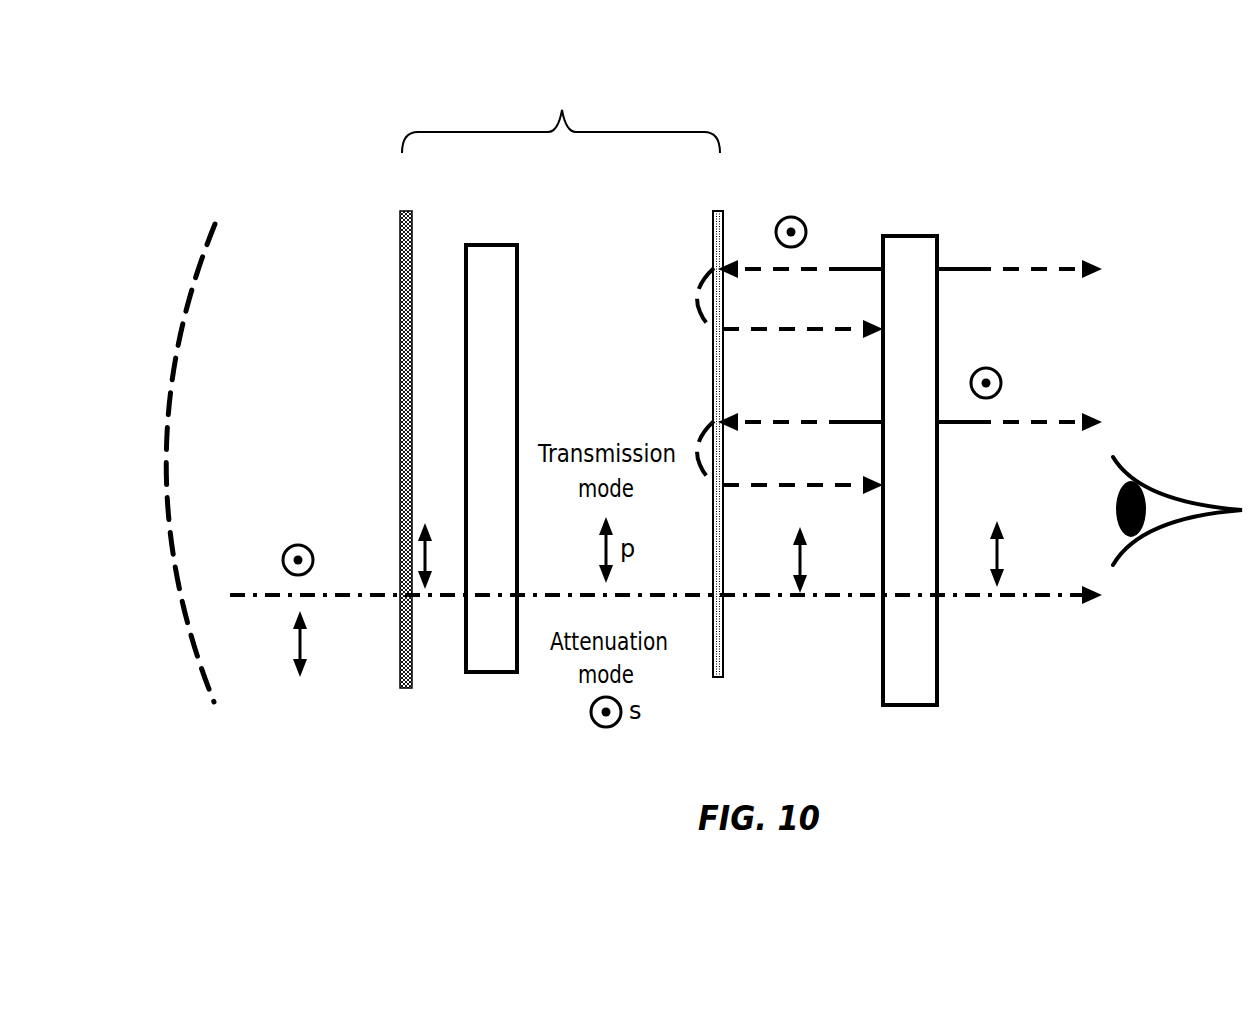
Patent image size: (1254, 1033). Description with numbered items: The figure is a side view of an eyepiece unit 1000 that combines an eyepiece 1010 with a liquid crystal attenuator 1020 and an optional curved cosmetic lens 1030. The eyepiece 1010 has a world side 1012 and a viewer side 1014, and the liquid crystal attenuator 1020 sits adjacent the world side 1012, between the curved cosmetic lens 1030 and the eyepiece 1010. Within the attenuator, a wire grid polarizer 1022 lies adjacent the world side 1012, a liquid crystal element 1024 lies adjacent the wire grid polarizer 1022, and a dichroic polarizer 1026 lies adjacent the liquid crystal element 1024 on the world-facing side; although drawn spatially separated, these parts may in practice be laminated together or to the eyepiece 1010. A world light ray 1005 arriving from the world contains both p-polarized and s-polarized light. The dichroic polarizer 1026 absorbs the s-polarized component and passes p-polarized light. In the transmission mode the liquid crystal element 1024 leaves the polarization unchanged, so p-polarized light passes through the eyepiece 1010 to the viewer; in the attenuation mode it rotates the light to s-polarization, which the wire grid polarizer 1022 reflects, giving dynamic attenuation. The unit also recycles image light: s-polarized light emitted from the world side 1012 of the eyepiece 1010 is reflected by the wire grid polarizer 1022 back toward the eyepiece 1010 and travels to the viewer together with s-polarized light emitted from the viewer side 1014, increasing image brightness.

The eyepiece unit 1000 is at (822, 114).
The world light ray 1005 is at (272, 595).
The curved cosmetic lens 1030 is at (172, 344).
The liquid crystal attenuator 1020 is at (561, 96).
The dichroic polarizer 1026 is at (398, 270).
The liquid crystal element 1024 is at (517, 268).
The wire grid polarizer 1022 is at (712, 376).
The eyepiece 1010 is at (938, 692).
The world side 1012 is at (883, 645).
The viewer side 1014 is at (938, 637).